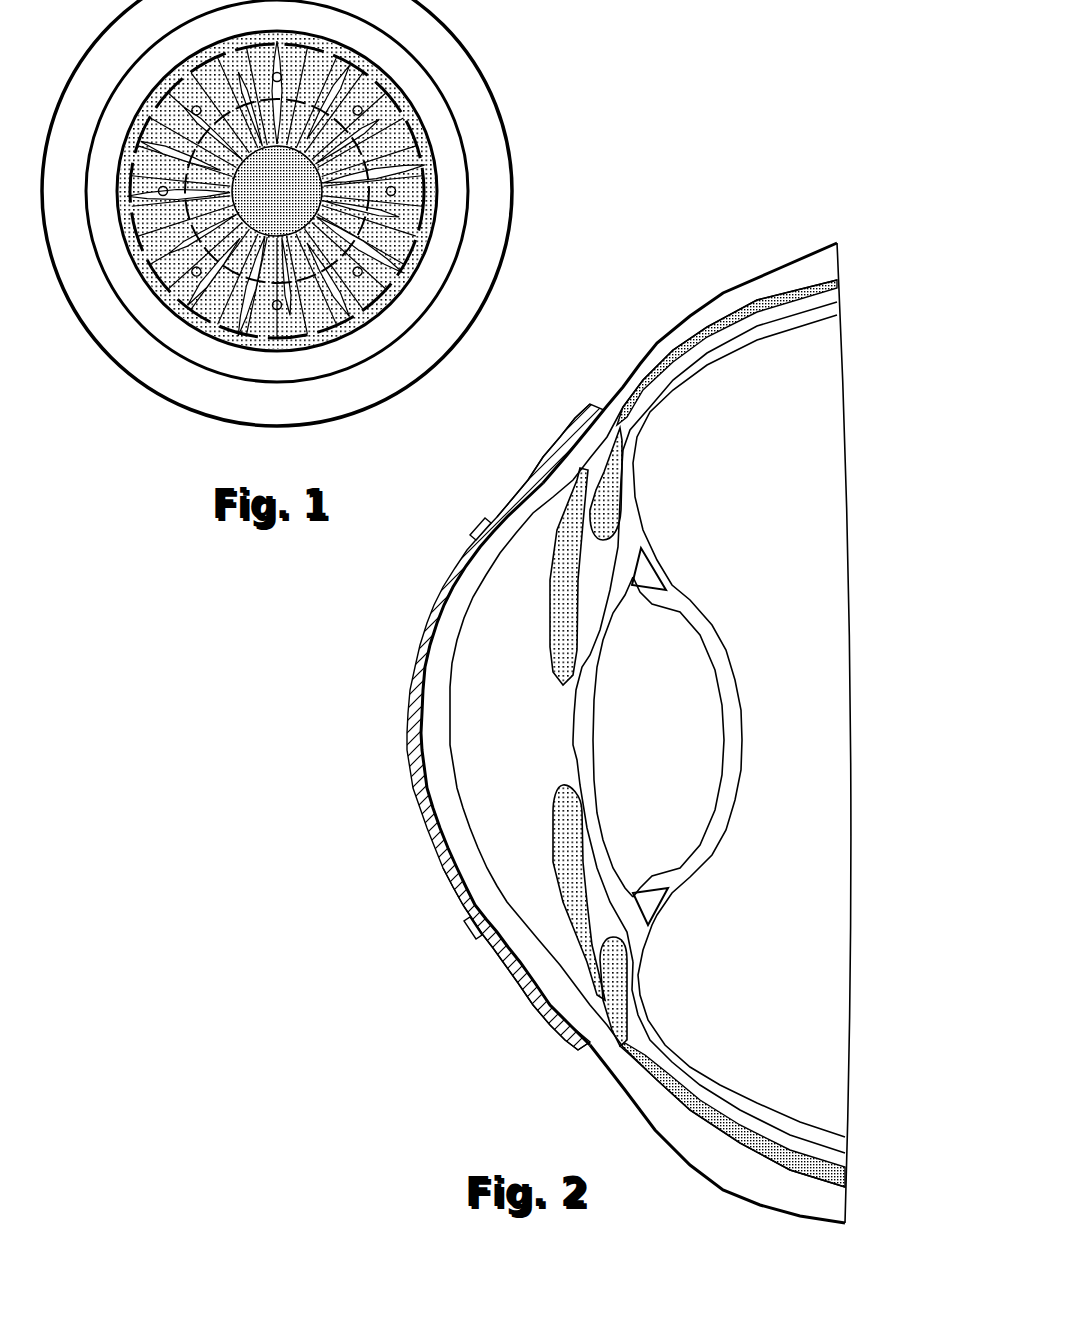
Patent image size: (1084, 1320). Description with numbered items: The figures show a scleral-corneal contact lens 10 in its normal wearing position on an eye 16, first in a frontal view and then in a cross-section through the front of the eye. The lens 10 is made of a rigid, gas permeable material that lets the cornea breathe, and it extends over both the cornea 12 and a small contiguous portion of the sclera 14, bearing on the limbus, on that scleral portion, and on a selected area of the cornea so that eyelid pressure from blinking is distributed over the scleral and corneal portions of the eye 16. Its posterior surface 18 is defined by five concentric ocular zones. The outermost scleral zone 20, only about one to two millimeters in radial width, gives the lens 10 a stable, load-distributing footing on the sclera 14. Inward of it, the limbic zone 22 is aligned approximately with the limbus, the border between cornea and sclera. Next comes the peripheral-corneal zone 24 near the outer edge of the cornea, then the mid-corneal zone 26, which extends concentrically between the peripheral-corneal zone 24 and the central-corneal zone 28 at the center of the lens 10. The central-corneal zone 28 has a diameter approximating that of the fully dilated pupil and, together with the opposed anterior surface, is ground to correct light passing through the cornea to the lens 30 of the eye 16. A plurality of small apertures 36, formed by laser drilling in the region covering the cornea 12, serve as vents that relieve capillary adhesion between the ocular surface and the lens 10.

In FIG. 1, the contact lens 10 is at (472, 137).
In FIG. 2, the contact lens 10 is at (388, 710).
In FIG. 2, the cornea 12 is at (437, 670).
In FIG. 1, the sclera 14 is at (255, 417).
In FIG. 2, the sclera 14 is at (555, 983).
In FIG. 2, the eye 16 is at (768, 669).
In FIG. 2, the posterior surface 18 is at (440, 788).
In FIG. 1, the scleral zone 20 is at (458, 193).
In FIG. 2, the scleral zone 20 is at (595, 1035).
In FIG. 1, the limbic zone 22 is at (430, 260).
In FIG. 2, the limbic zone 22 is at (530, 990).
In FIG. 1, the peripheral-corneal zone 24 is at (380, 323).
In FIG. 2, the peripheral-corneal zone 24 is at (490, 923).
In FIG. 1, the mid-corneal zone 26 is at (320, 363).
In FIG. 2, the mid-corneal zone 26 is at (462, 875).
In FIG. 1, the central-corneal zone 28 is at (160, 88).
In FIG. 2, the central-corneal zone 28 is at (430, 745).
In FIG. 2, the lens of the eye 30 is at (553, 725).
In FIG. 1, the apertures 36 is at (385, 102).
In FIG. 2, the apertures 36 is at (482, 532).